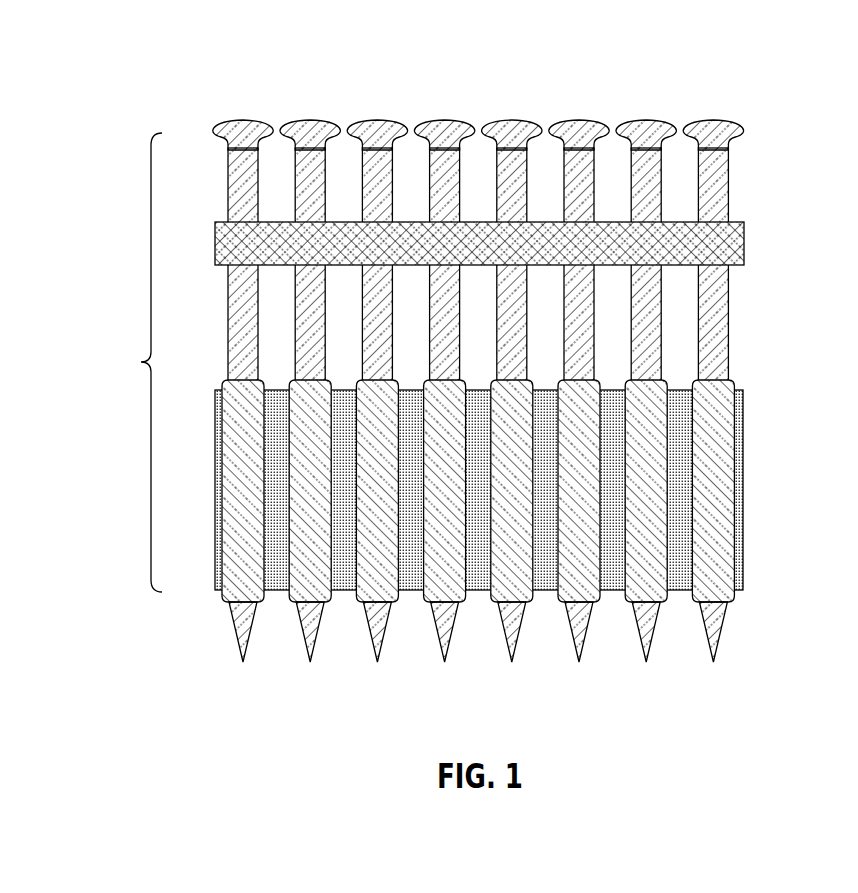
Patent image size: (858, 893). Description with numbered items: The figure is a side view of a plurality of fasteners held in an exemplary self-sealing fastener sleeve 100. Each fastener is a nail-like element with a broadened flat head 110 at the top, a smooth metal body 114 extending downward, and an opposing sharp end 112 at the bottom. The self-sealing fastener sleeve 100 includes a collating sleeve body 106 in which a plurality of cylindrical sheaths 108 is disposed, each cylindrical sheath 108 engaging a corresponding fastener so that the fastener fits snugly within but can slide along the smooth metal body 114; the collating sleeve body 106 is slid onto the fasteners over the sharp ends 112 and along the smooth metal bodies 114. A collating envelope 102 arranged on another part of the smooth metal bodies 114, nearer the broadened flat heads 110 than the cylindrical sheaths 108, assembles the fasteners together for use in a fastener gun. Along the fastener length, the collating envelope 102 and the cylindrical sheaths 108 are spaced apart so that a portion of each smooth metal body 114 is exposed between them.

The self-sealing fastener sleeve 100 is at (470, 385).
The collating envelope 102 is at (735, 232).
The collating sleeve body 106 is at (272, 590).
The cylindrical sheath 108 is at (292, 379).
The broadened flat head 110 is at (244, 118).
The opposing sharp end 112 is at (242, 655).
The smooth metal body 114 is at (133, 362).